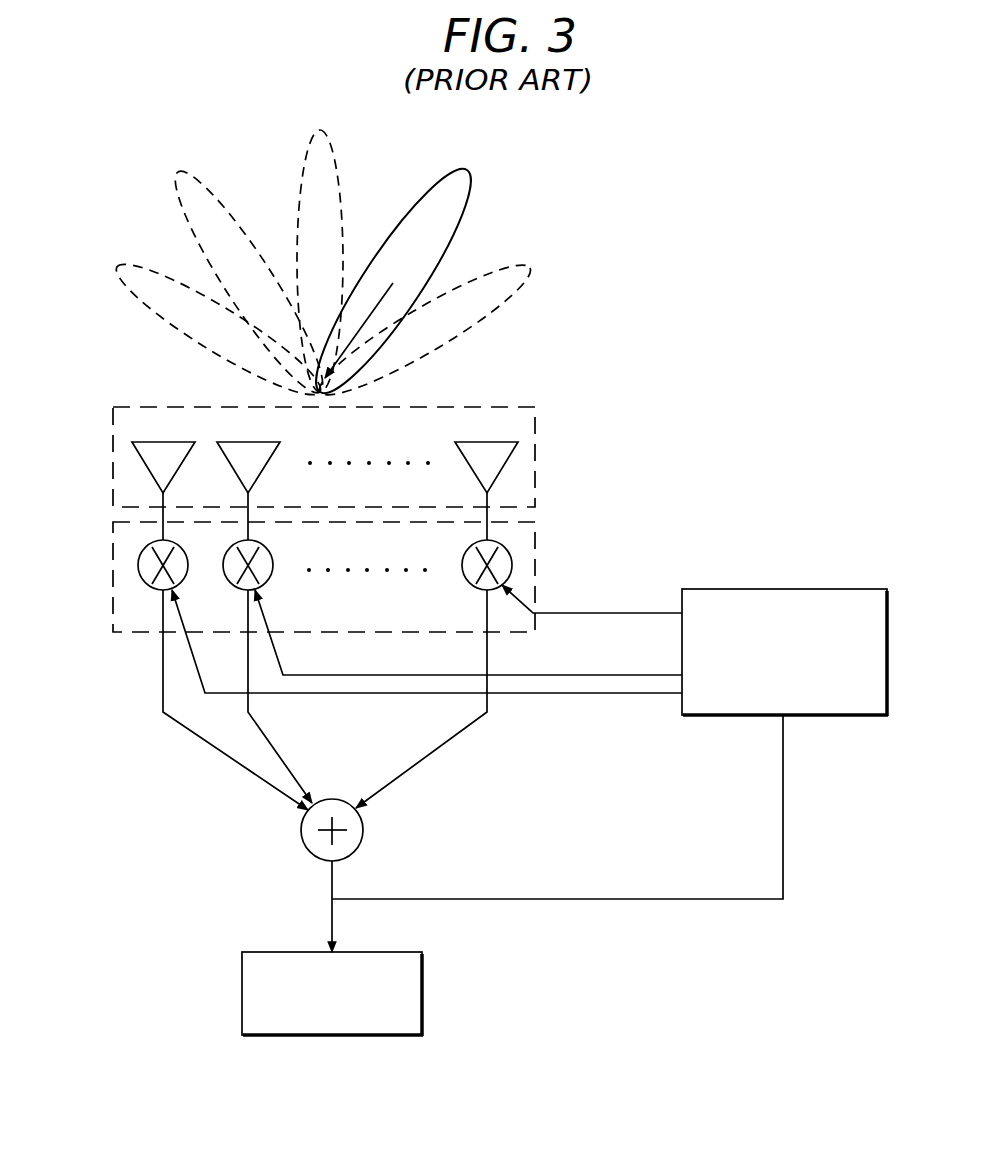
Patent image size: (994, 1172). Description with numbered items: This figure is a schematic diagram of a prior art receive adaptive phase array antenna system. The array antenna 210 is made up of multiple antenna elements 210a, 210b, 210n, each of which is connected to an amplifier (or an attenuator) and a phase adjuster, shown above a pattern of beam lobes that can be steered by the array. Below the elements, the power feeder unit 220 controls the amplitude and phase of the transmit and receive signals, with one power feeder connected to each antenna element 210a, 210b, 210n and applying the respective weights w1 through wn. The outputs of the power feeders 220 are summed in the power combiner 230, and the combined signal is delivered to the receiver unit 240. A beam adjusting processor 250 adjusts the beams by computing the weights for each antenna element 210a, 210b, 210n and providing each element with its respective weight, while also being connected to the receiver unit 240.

The array antenna 210 is at (113, 452).
The antenna element 210a is at (162, 475).
The antenna element 210b is at (250, 475).
The antenna element 210n is at (488, 475).
The power feeder unit 220 is at (113, 567).
The power combiner 230 is at (301, 832).
The receiver unit 240 is at (330, 1036).
The beam adjusting processor 250 is at (778, 589).